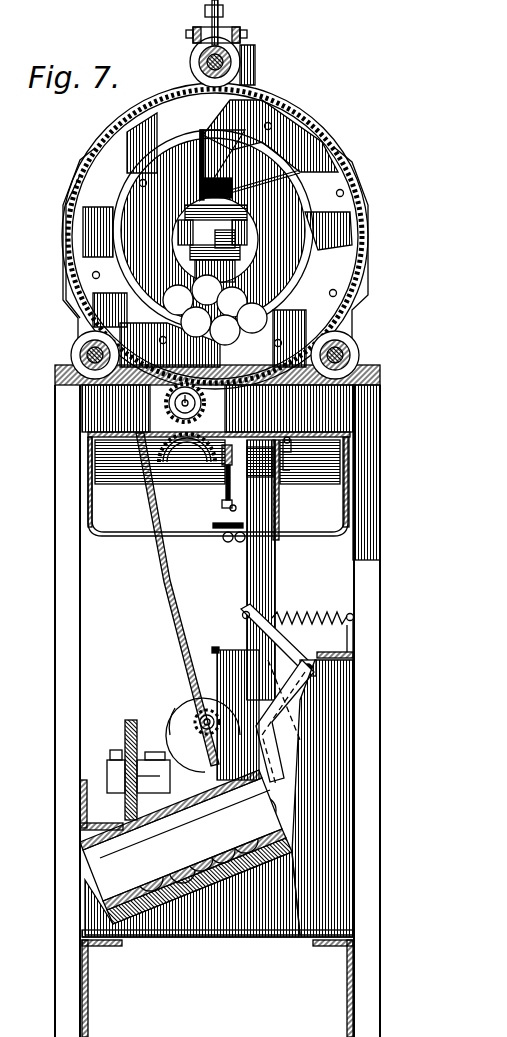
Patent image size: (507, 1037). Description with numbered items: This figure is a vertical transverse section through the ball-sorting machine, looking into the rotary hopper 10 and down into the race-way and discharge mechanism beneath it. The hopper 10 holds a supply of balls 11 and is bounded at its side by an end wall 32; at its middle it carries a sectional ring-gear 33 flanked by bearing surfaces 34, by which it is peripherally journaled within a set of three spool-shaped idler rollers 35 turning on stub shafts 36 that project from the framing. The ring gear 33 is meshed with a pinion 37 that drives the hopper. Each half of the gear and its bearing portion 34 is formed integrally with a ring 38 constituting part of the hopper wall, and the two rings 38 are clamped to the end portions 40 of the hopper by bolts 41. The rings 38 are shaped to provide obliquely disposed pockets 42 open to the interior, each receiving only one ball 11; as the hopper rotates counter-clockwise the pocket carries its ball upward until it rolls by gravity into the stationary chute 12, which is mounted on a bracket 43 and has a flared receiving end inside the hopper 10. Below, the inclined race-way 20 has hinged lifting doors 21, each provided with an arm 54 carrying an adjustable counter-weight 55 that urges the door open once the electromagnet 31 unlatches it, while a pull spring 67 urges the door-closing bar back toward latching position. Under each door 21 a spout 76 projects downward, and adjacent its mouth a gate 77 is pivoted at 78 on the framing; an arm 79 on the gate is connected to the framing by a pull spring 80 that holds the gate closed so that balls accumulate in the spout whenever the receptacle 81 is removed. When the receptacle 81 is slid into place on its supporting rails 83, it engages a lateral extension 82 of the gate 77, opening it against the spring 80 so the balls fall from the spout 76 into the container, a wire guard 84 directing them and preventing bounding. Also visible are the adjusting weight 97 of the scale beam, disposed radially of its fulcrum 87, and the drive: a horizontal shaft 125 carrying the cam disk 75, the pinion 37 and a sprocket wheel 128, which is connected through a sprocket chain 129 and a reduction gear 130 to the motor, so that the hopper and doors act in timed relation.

The rotary hopper 10 is at (213, 230).
The balls 11 is at (195, 293).
The stationary chute 12 is at (200, 182).
The inclined race-way 20 is at (226, 457).
The hinged lifting doors 21 is at (265, 470).
The electromagnet 31 is at (230, 543).
The end wall 32 is at (178, 238).
The sectional ring-gear 33 is at (84, 166).
The bearing surfaces 34 is at (78, 187).
The spool-shaped idler rollers 35 is at (192, 55).
The stub shafts 36 is at (213, 62).
The pinion 37 is at (172, 404).
The ring 38 is at (292, 128).
The end portions of the hopper 40 is at (70, 240).
The bolts 41 is at (270, 126).
The obliquely disposed pockets 42 is at (128, 145).
The bracket 43 is at (248, 245).
The arm 54 is at (280, 463).
The counter-weight 55 is at (296, 450).
The pull spring 67 is at (224, 506).
The cam disk 75 is at (96, 465).
The chute or spout 76 is at (276, 568).
The gate 77 is at (282, 703).
The pivot 78 is at (316, 668).
The arm 79 is at (275, 642).
The pull spring 80 is at (320, 615).
The receptacle 81 is at (290, 827).
The lateral extension 82 is at (280, 785).
The supporting rails 83 is at (275, 860).
The guard 84 is at (85, 822).
The fulcrum 87 is at (248, 33).
The adjusting weight 97 is at (222, 12).
The horizontal shaft 125 is at (180, 408).
The sprocket wheel 128 is at (150, 494).
The sprocket chain 129 is at (150, 576).
The reduction gear 130 is at (178, 718).